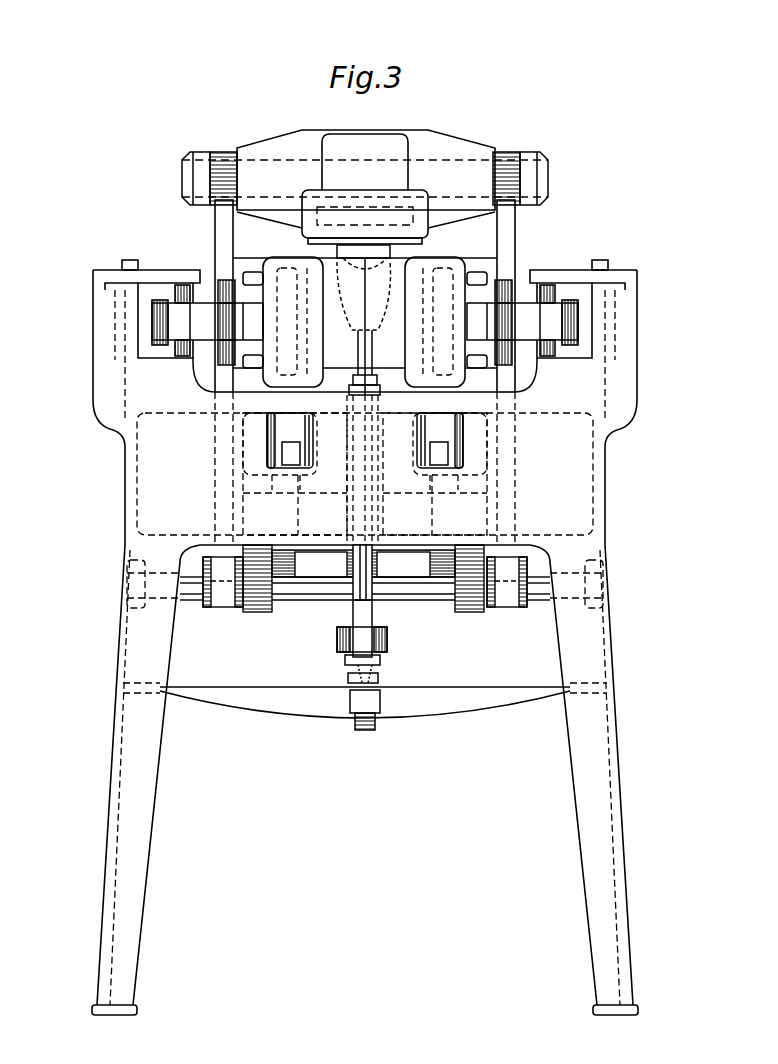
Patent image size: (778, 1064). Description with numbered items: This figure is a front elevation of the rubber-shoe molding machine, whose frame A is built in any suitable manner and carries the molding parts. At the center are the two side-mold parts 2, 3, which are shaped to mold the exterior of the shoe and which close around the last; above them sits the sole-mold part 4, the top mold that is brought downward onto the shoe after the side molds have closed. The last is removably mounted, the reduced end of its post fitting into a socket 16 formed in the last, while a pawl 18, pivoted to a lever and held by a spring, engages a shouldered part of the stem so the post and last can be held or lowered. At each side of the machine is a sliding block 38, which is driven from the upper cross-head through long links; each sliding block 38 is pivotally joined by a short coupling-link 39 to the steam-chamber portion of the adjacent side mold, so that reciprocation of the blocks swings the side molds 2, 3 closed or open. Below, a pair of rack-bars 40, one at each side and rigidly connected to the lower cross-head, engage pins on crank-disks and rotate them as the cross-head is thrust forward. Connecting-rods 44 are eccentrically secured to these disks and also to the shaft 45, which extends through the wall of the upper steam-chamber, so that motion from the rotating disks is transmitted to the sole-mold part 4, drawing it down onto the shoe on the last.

The frame A is at (365, 637).
The side-mold part 2 is at (284, 260).
The side-mold part 3 is at (440, 262).
The sole-mold part 4 is at (365, 187).
The socket 16 is at (373, 497).
The pawl 18 is at (373, 621).
The sliding block 38 is at (150, 302).
The coupling-link 39 is at (365, 320).
The rack-bar 40 is at (365, 451).
The connecting-rod 44 is at (215, 241).
The shaft 45 is at (549, 184).